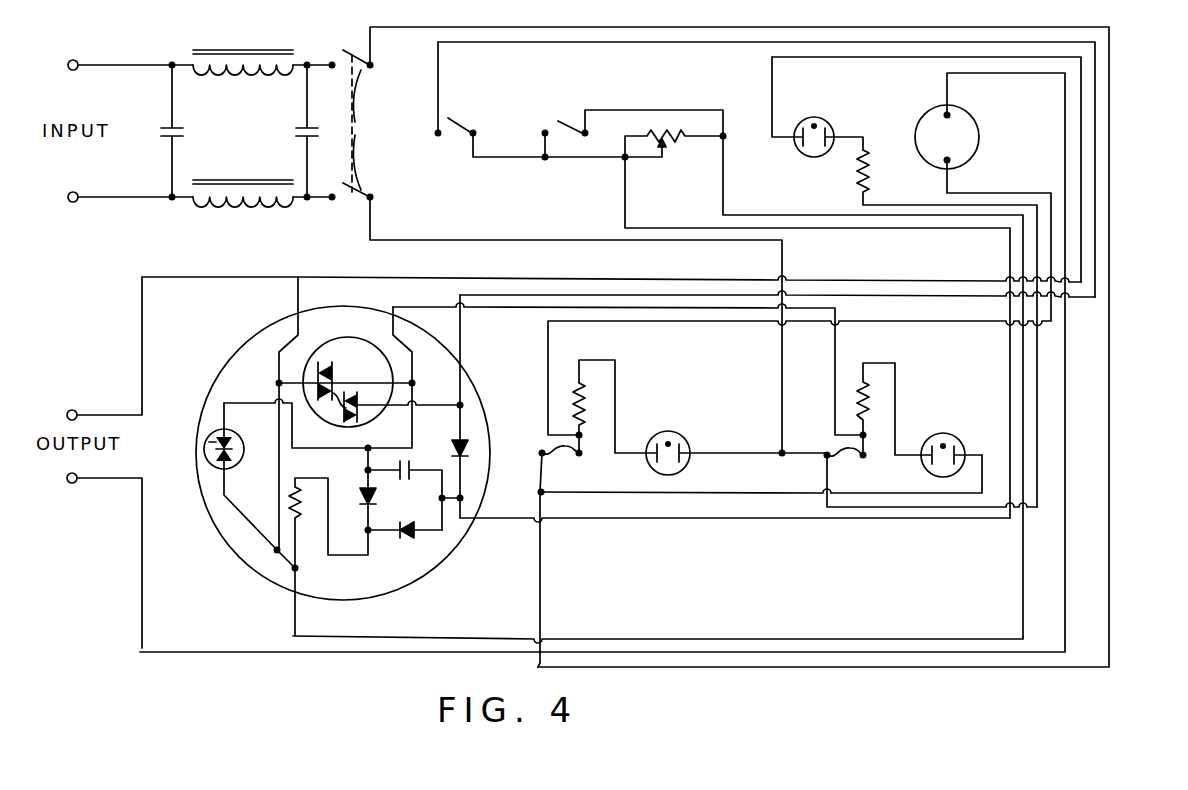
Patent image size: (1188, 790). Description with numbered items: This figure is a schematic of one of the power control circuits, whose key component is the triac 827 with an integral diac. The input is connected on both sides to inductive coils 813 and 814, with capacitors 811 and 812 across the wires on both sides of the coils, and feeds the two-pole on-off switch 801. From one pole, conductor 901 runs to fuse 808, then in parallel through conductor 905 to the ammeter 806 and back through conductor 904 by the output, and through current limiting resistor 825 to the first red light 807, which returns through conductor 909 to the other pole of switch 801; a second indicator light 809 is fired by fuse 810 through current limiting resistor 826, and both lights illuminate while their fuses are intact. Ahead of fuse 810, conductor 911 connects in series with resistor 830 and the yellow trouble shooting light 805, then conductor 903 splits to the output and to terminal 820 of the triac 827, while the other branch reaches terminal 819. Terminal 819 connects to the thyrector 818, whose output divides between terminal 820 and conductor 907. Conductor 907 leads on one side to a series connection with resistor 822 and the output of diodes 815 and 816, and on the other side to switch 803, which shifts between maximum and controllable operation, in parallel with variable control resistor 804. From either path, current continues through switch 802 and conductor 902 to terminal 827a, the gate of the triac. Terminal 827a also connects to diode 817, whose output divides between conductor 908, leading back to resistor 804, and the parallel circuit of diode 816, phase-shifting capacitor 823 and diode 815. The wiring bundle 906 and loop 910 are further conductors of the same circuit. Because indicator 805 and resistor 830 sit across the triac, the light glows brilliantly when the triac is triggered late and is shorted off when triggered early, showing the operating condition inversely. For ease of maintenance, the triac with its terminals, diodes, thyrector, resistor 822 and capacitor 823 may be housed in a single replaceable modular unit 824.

The on-off switch 801 is at (369, 125).
The switch 802 is at (464, 133).
The switch 803 is at (572, 122).
The variable control resistor 804 is at (673, 148).
The yellow trouble shooting light 805 is at (796, 152).
The ammeter 806 is at (918, 152).
The first red light 807 is at (678, 437).
The fuse 808 is at (557, 458).
The indicator light 809 is at (935, 440).
The fuse 810 is at (840, 462).
The capacitor 811 is at (183, 133).
The capacitor 812 is at (296, 133).
The inductive coil 813 is at (227, 48).
The inductive coil 814 is at (268, 178).
The diode 815 is at (366, 488).
The diode 816 is at (400, 538).
The diode 817 is at (470, 455).
The thyrector 818 is at (200, 457).
The terminal 819 is at (414, 382).
The terminal 820 is at (275, 385).
The resistor 822 is at (298, 508).
The phase-shifting capacitor 823 is at (415, 473).
The replaceable plug or modular unit 824 is at (455, 545).
The current limiting resistor 825 is at (570, 400).
The current limiting resistor 826 is at (853, 392).
The triac 827 is at (316, 357).
The gate terminal 827a is at (463, 403).
The current limiting resistor 830 is at (864, 150).
The conductor 901 is at (667, 27).
The conductor 902 is at (795, 42).
The conductor 903 is at (1081, 122).
The conductor 904 is at (1065, 93).
The conductor 905 is at (1057, 238).
The conductor 906 is at (968, 205).
The conductor 907 is at (1023, 243).
The conductor 908 is at (1012, 258).
The conductor 909 is at (530, 240).
The wire 910 is at (648, 307).
The conductor 911 is at (1037, 372).